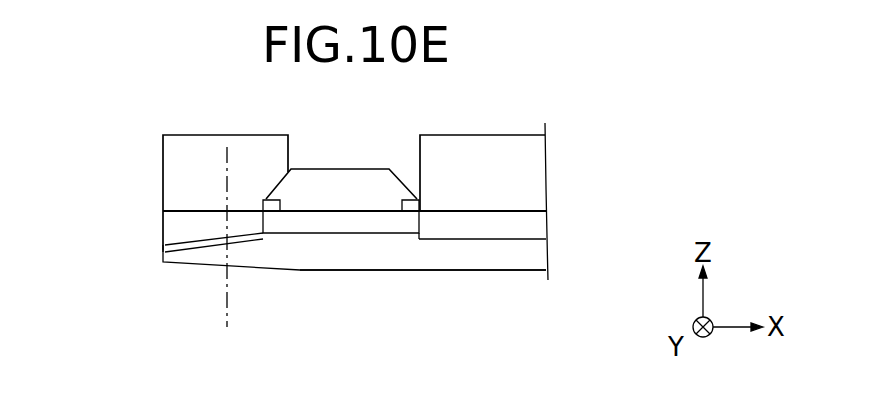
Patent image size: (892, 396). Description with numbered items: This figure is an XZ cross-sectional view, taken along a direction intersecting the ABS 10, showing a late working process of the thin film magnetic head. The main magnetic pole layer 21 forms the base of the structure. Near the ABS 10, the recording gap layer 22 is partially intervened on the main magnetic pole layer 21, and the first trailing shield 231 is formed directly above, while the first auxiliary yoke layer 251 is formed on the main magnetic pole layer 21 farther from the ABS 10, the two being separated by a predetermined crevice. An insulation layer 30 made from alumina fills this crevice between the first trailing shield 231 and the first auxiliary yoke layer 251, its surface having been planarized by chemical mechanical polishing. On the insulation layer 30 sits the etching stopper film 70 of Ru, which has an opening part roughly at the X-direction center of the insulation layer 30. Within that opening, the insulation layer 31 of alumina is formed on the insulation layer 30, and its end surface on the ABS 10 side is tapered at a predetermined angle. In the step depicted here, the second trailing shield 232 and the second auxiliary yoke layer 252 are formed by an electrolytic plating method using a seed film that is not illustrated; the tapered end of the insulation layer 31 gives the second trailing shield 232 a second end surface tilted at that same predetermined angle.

The second trailing shield 232 is at (186, 152).
The second auxiliary yoke layer 252 is at (504, 147).
The insulation layer 31 is at (332, 180).
The etching stopper film 70 is at (273, 197).
The insulation layer 30 is at (367, 223).
The first auxiliary yoke layer 251 is at (528, 227).
The first trailing shield 231 is at (178, 232).
The recording gap layer 22 is at (182, 258).
The main magnetic pole layer 21 is at (528, 257).
The ABS 10 is at (227, 253).